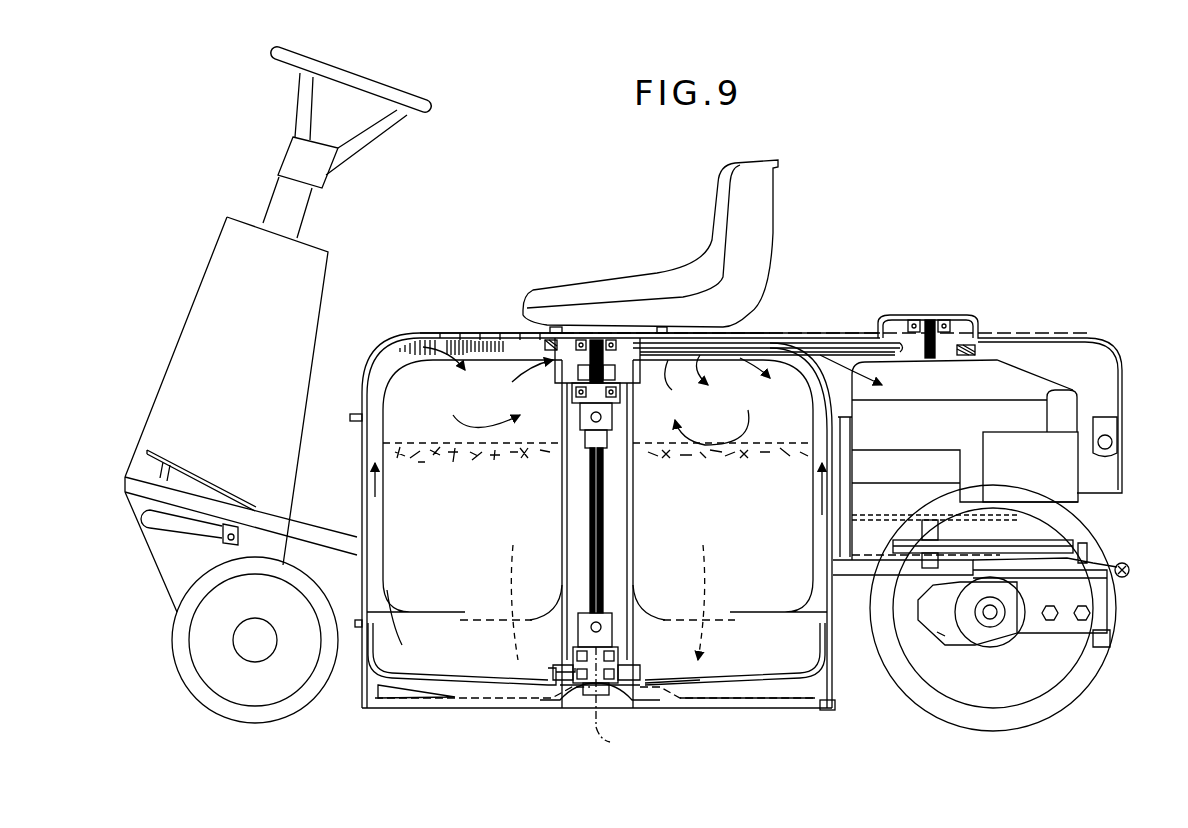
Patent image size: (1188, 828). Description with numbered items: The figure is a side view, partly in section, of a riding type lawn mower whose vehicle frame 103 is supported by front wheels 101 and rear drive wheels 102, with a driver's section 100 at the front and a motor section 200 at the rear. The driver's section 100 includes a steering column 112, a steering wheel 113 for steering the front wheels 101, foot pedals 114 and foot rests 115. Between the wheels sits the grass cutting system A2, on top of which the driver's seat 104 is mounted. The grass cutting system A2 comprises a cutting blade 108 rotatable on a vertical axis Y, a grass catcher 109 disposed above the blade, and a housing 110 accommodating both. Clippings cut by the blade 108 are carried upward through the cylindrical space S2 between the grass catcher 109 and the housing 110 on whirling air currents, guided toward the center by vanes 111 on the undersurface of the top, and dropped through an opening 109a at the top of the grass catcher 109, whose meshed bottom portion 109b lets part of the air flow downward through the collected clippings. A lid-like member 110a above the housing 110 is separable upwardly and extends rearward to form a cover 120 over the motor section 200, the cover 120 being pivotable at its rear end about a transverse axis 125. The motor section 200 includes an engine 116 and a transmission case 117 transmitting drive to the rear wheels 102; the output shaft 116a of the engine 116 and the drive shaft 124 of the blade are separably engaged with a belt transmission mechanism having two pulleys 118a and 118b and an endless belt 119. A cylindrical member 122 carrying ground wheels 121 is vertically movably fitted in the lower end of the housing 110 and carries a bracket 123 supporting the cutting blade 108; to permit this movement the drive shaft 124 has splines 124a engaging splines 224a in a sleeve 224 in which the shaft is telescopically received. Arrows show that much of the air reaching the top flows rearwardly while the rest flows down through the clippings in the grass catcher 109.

The driver's section 100 is at (448, 110).
The front wheels 101 is at (182, 653).
The rear drive wheels 102 is at (1088, 668).
The vehicle frame 103 is at (336, 523).
The driver's seat 104 is at (770, 210).
The cutting blade 108 is at (740, 708).
The grass catcher 109 is at (393, 325).
The opening 109a is at (502, 357).
The meshed bottom portion 109b is at (495, 617).
The housing 110 is at (360, 470).
The lid-like member 110a is at (370, 378).
The vanes 111 is at (447, 333).
The steering column 112 is at (236, 220).
The steering wheel 113 is at (425, 115).
The foot pedals 114 is at (182, 447).
The foot rests 115 is at (270, 508).
The engine 116 is at (1073, 483).
The output shaft 116a is at (923, 358).
The transmission case 117 is at (1093, 600).
The pulley 118a is at (533, 353).
The pulley 118b is at (955, 350).
The endless belt 119 is at (768, 380).
The cover 120 is at (1090, 337).
The ground wheels 121 is at (815, 712).
The cylindrical member 122 is at (832, 692).
The bracket 123 is at (705, 675).
The drive shaft 124 is at (607, 565).
The splines 124a is at (605, 503).
The transverse axis 125 is at (1110, 440).
The motor section 200 is at (1005, 467).
The sleeve 224 is at (587, 518).
The splines 224a is at (588, 487).
The cylindrical space S2 is at (365, 445).
The grass cutting system A2 is at (525, 733).
The vertical axis Y is at (612, 702).